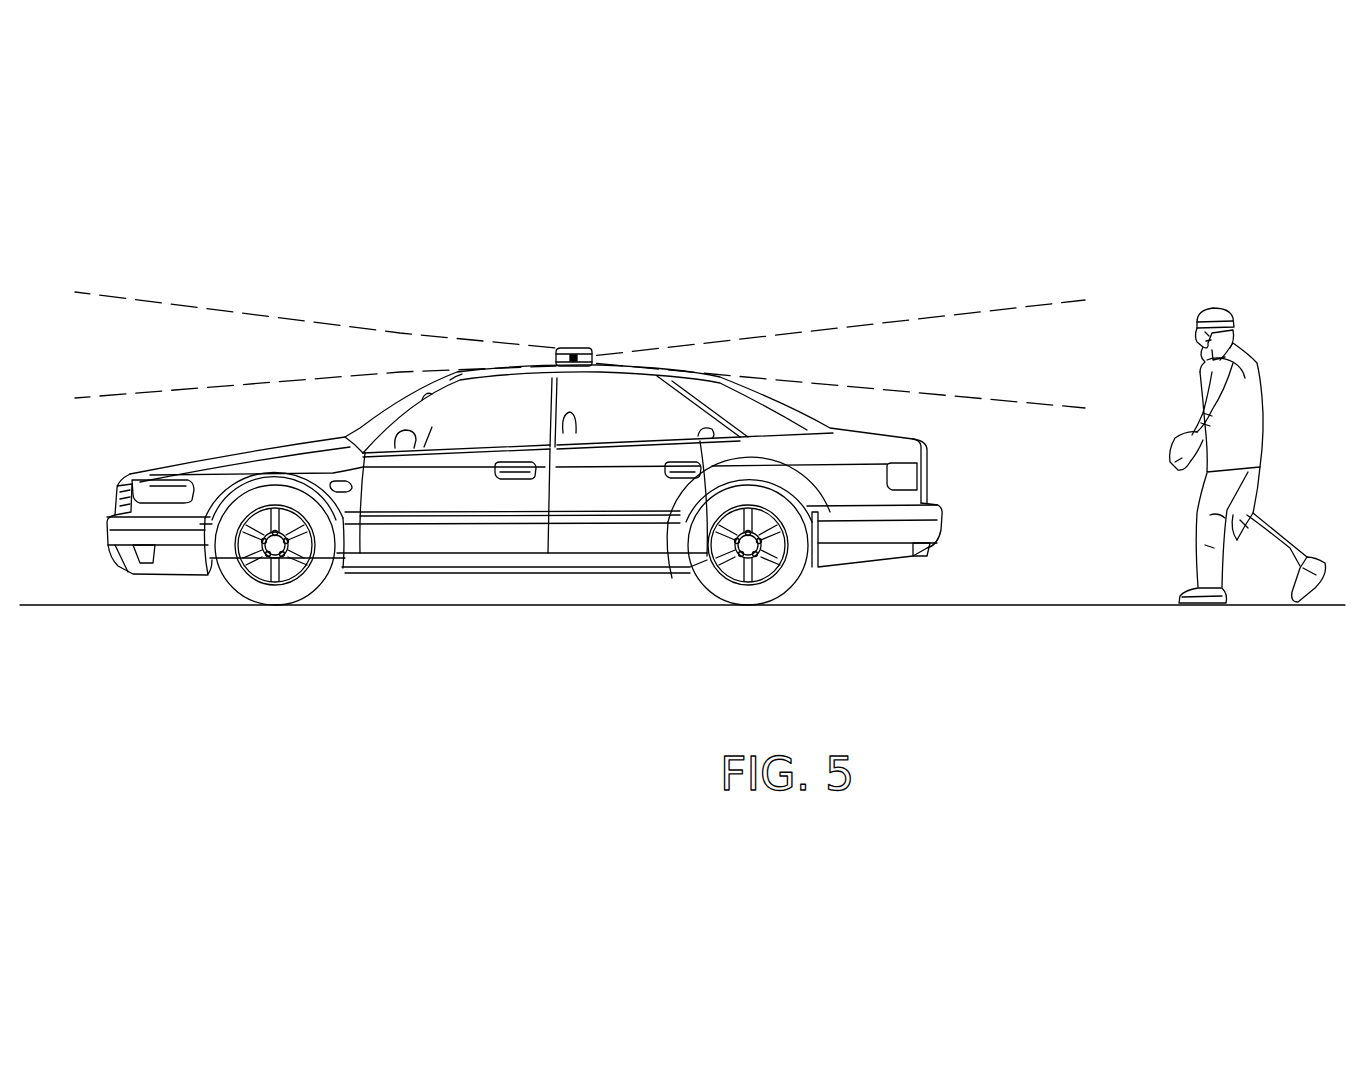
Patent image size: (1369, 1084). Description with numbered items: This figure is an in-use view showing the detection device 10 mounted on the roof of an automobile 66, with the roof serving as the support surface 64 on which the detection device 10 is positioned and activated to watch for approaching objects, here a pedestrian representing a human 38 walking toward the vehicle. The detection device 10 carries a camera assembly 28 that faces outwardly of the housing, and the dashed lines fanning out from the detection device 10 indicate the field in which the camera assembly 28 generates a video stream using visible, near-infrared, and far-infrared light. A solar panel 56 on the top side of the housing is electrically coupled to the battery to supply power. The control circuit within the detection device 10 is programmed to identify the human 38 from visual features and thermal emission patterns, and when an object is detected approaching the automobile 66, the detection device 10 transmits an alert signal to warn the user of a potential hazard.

The detection device 10 is at (580, 448).
The camera assembly 28 is at (540, 357).
The human 38 is at (1247, 367).
The solar panel 56 is at (570, 348).
The support surface 64 is at (613, 363).
The automobile 66 is at (482, 497).